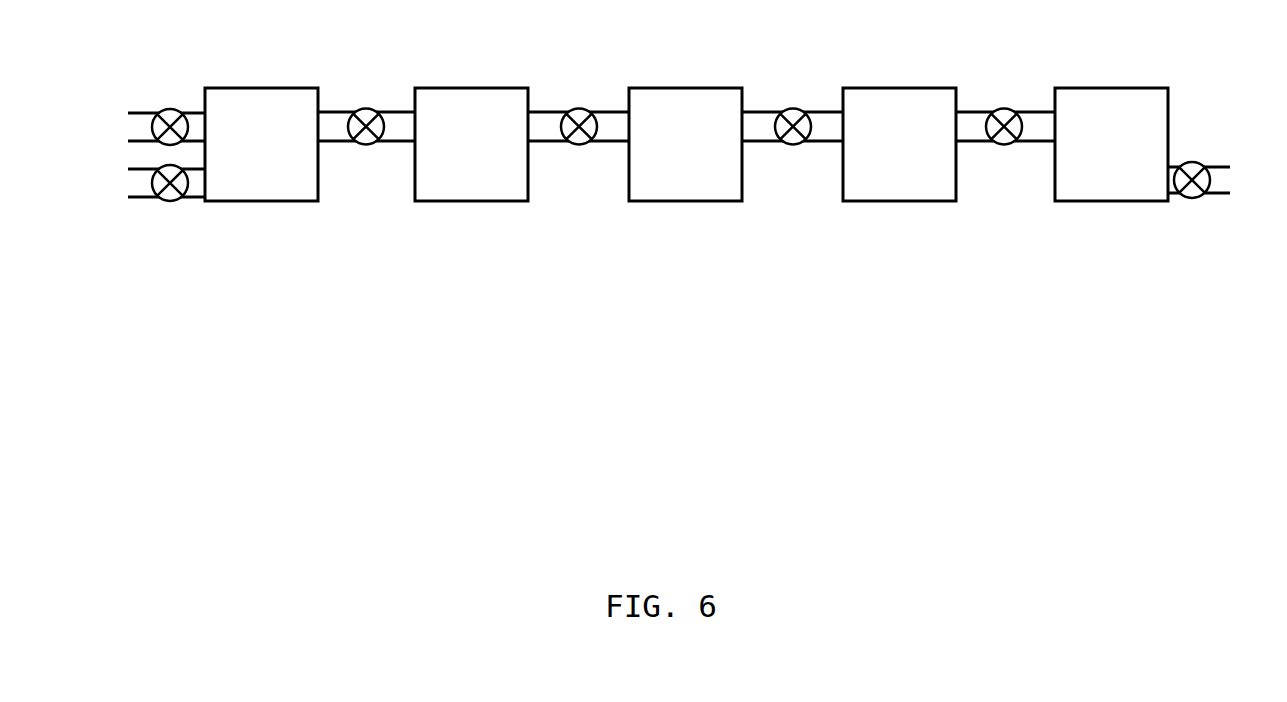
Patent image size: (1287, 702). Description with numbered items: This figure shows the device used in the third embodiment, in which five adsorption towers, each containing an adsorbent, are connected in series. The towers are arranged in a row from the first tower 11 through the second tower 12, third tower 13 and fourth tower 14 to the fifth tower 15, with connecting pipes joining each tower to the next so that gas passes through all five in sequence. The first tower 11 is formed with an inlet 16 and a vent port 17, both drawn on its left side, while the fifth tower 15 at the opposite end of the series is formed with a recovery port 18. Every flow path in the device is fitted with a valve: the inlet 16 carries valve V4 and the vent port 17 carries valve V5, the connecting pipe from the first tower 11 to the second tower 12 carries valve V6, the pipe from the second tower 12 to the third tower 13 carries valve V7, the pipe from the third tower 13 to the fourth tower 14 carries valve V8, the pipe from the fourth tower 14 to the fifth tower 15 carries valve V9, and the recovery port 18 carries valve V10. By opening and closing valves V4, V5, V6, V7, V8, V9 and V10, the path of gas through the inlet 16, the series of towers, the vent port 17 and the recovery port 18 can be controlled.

The first tower 11 is at (267, 203).
The second tower 12 is at (473, 202).
The third tower 13 is at (688, 202).
The fourth tower 14 is at (902, 202).
The fifth tower 15 is at (1113, 202).
The inlet 16 is at (135, 129).
The vent port 17 is at (135, 186).
The recovery port 18 is at (1223, 178).
The valve V4 is at (167, 110).
The valve V5 is at (168, 201).
The valve V6 is at (364, 144).
The valve V7 is at (580, 144).
The valve V8 is at (793, 144).
The valve V9 is at (1007, 144).
The valve V10 is at (1187, 198).